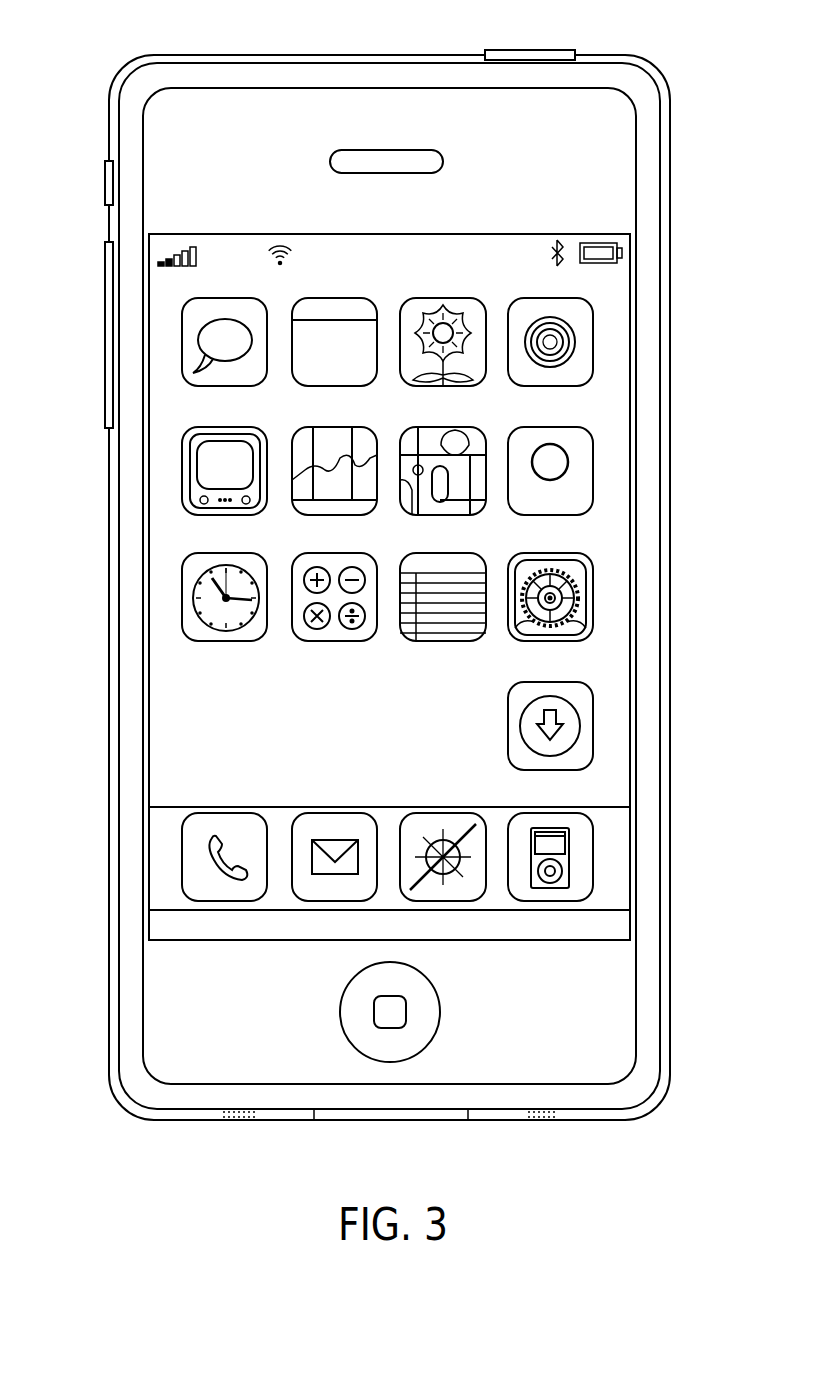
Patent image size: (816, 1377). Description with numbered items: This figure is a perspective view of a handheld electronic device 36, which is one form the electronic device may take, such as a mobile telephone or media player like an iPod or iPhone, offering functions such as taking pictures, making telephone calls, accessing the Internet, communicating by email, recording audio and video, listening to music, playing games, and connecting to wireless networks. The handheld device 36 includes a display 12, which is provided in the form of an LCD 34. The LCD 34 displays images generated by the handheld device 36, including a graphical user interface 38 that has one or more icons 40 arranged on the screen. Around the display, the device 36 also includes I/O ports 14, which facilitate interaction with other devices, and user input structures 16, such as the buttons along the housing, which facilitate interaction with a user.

The display 12 is at (612, 450).
The I/O ports 14 is at (240, 57).
The user input structures 16 is at (530, 50).
The LCD 34 is at (620, 700).
The handheld electronic device 36 is at (136, 31).
The graphical user interface 38 is at (170, 562).
The icons 40 is at (440, 300).